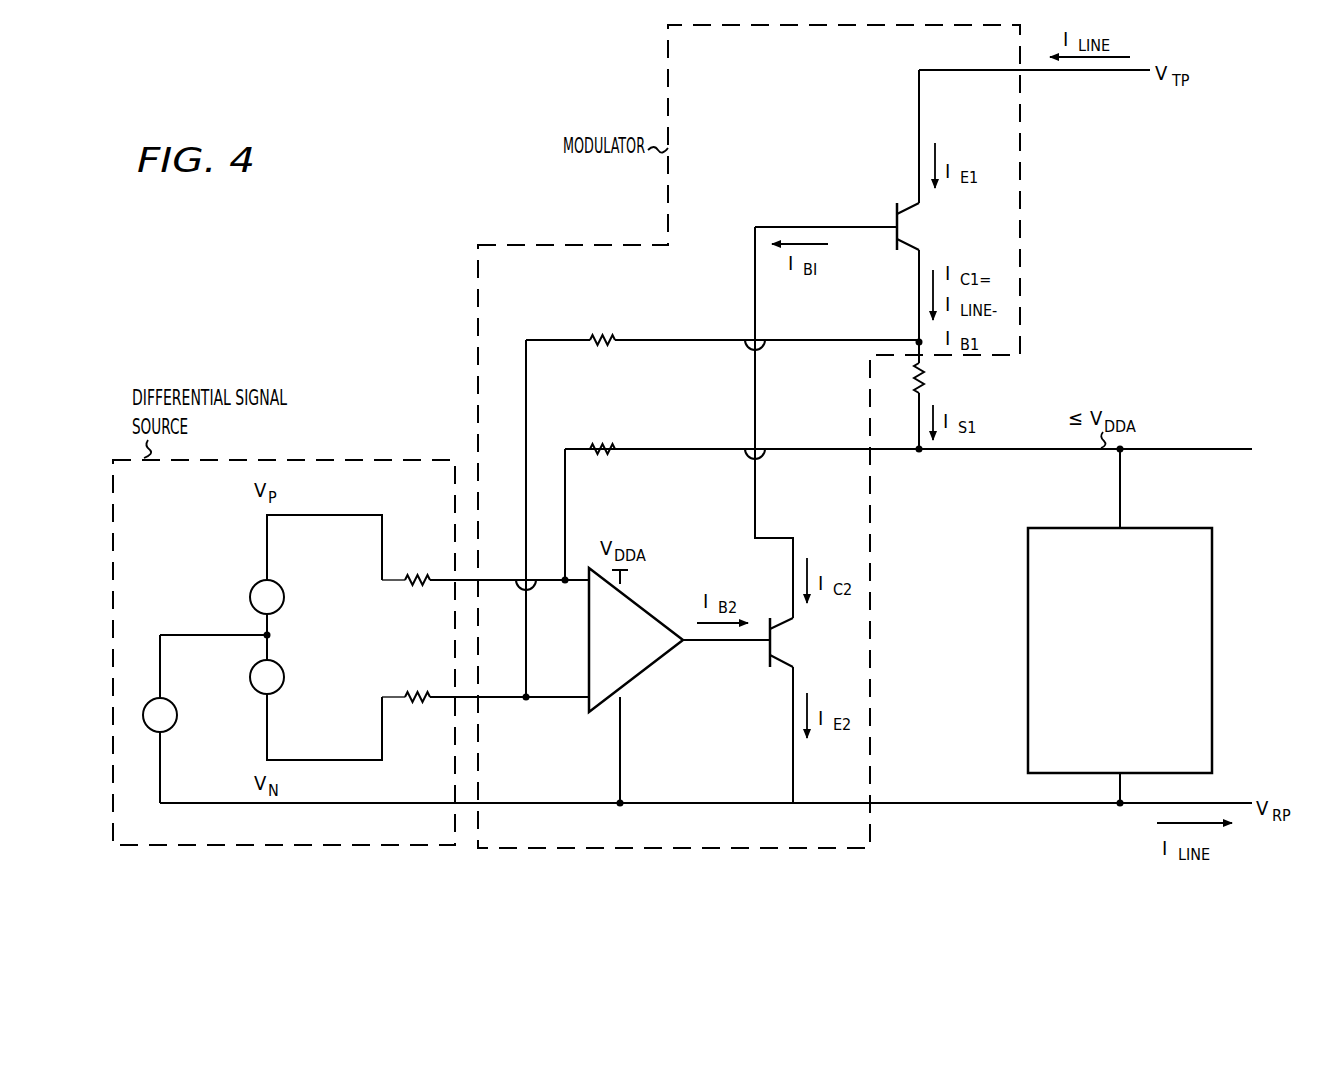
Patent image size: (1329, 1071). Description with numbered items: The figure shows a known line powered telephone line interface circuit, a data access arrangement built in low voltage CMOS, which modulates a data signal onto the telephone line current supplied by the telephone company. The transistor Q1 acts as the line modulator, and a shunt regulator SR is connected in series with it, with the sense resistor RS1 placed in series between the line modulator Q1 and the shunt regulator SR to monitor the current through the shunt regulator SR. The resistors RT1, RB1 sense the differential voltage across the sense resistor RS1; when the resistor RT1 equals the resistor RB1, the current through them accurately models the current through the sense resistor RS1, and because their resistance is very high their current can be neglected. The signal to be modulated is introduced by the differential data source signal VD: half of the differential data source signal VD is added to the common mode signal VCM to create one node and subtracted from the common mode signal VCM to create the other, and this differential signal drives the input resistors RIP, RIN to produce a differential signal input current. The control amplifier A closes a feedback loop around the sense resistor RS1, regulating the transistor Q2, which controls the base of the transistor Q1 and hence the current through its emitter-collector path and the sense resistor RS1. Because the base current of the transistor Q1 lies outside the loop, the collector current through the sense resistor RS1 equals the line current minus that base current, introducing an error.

The transistor Q1 is at (932, 226).
The transistor Q2 is at (804, 642).
The resistor RT1 is at (601, 360).
The resistor RB1 is at (601, 469).
The sense resistor RS1 is at (930, 381).
The input resistor RIP is at (415, 577).
The input resistor RIN is at (417, 705).
The amplifier A is at (636, 640).
The common mode signal VCM is at (181, 716).
The differential data source signal VD is at (254, 634).
The shunt regulator SR is at (1120, 650).